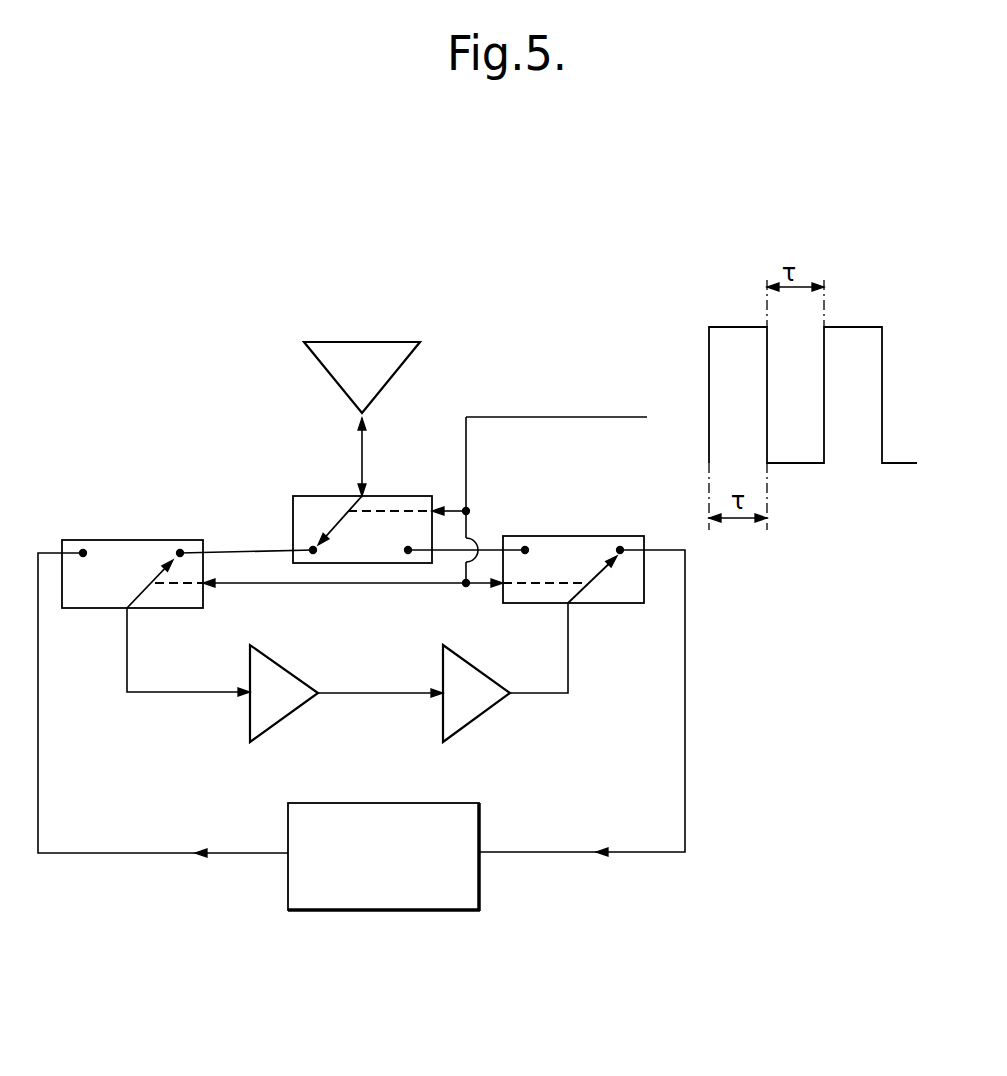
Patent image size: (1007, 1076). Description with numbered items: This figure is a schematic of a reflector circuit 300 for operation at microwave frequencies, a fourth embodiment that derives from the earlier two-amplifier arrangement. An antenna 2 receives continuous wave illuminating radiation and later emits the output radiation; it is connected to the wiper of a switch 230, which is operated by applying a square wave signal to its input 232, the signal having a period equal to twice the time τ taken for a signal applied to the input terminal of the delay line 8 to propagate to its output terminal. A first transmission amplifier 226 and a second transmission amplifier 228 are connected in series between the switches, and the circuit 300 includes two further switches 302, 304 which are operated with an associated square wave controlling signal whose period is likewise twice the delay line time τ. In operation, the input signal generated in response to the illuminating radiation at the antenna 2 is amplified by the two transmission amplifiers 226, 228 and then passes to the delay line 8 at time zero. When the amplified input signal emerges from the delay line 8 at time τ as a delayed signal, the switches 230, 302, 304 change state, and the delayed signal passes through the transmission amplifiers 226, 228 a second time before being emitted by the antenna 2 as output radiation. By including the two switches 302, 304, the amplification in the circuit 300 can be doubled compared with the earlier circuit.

The reflector circuit 300 is at (622, 248).
The antenna 2 is at (328, 360).
The switch 230 is at (300, 509).
The input 232 is at (433, 507).
The further switch 302 is at (115, 555).
The further switch 304 is at (612, 593).
The first transmission amplifier 226 is at (276, 718).
The second transmission amplifier 228 is at (466, 718).
The delay line 8 is at (452, 893).